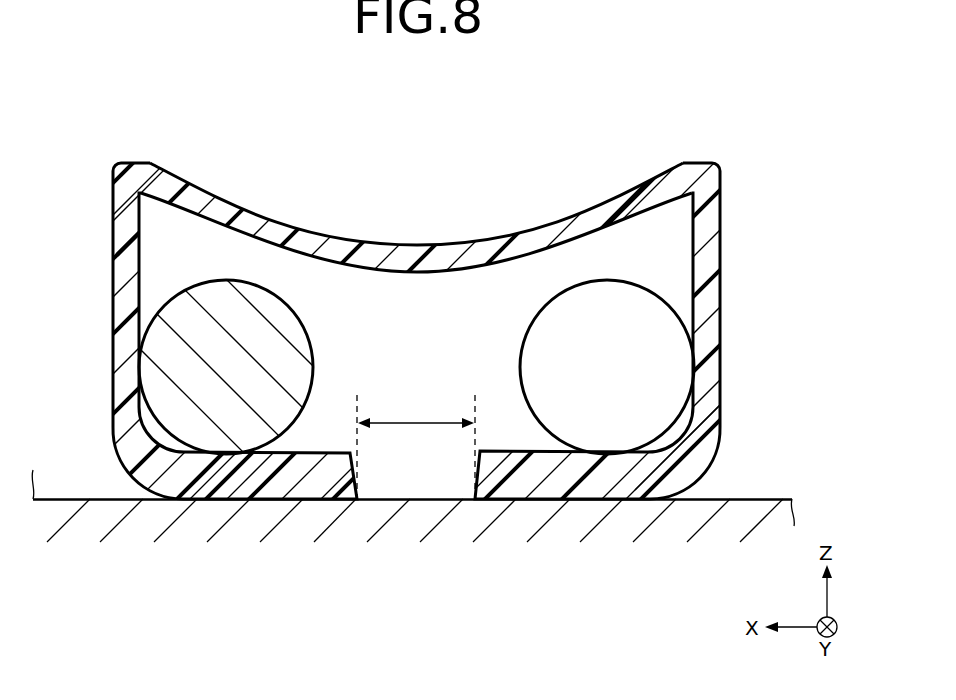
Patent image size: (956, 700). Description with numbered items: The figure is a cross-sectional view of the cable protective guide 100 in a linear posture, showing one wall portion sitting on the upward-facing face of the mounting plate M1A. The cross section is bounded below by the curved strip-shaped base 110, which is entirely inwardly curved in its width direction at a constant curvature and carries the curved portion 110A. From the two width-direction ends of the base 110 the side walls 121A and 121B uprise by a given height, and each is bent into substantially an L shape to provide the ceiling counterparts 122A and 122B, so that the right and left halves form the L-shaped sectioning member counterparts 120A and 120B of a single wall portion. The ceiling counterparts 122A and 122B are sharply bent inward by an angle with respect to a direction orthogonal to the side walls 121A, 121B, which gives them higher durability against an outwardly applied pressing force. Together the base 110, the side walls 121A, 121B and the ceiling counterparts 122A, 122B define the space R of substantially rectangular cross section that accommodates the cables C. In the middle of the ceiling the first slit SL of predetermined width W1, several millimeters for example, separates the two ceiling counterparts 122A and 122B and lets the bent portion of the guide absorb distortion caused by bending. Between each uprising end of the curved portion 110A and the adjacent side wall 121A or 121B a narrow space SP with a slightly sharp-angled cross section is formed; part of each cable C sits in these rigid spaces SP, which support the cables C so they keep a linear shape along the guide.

The cable protective guide 100 is at (122, 128).
The base 110 is at (416, 211).
The curved portion 110A is at (447, 256).
The sectioning member counterpart 120A is at (652, 490).
The sectioning member counterpart 120B is at (178, 490).
The side wall 121A is at (548, 485).
The side wall 121B is at (245, 485).
The ceiling counterpart 122A is at (708, 297).
The ceiling counterpart 122B is at (125, 310).
The space SP is at (686, 228).
The space R is at (425, 308).
The cables C is at (285, 372).
The first slit SL is at (426, 470).
The width W1 is at (416, 411).
The mounting plate M1A is at (740, 498).